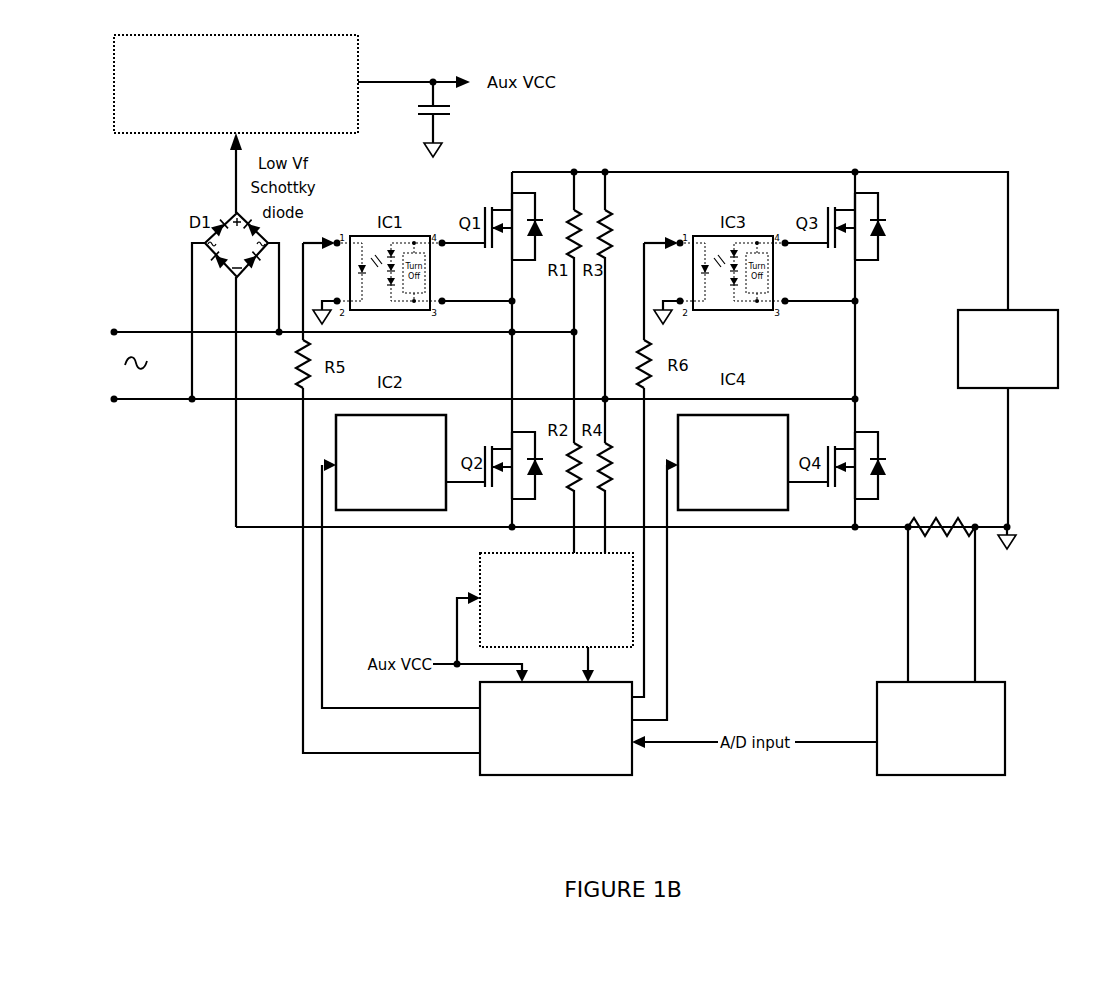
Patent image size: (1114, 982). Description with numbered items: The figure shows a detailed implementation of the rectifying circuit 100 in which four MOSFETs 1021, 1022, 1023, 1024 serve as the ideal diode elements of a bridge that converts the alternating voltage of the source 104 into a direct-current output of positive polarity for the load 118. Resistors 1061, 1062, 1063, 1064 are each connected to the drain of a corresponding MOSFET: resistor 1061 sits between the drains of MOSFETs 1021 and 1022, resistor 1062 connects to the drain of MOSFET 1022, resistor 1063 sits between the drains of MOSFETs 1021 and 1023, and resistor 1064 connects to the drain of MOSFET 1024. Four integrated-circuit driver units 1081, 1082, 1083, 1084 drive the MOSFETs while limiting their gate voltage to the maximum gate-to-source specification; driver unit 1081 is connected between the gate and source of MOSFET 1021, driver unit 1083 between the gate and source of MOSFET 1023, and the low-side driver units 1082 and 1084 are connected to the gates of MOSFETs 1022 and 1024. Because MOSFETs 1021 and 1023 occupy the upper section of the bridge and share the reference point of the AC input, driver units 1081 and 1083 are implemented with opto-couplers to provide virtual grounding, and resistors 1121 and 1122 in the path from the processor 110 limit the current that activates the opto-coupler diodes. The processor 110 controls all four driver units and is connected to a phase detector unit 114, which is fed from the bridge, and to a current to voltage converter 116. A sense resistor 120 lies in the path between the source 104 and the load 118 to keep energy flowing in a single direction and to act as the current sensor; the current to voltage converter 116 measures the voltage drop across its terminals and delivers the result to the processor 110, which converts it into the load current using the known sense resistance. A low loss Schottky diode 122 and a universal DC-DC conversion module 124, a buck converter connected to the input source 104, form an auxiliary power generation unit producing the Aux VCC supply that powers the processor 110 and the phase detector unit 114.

The rectifying circuit 100 is at (968, 120).
The MOSFET 1021 is at (508, 203).
The MOSFET 1022 is at (510, 438).
The MOSFET 1023 is at (853, 203).
The MOSFET 1024 is at (852, 437).
The source 104 is at (140, 367).
The resistor 1061 is at (571, 226).
The resistor 1062 is at (571, 478).
The resistor 1063 is at (608, 240).
The resistor 1064 is at (606, 466).
The driver unit 1081 is at (357, 232).
The driver unit 1082 is at (408, 412).
The driver unit 1083 is at (700, 232).
The driver unit 1084 is at (757, 412).
The processor 110 is at (508, 773).
The resistor 1121 is at (298, 356).
The resistor 1122 is at (656, 360).
The phase detector unit 114 is at (478, 563).
The current to voltage converter 116 is at (937, 777).
The load 118 is at (1037, 308).
The resistor 120 is at (945, 535).
The low loss diode 122 is at (233, 215).
The universal DC-DC conversion module 124 is at (114, 104).